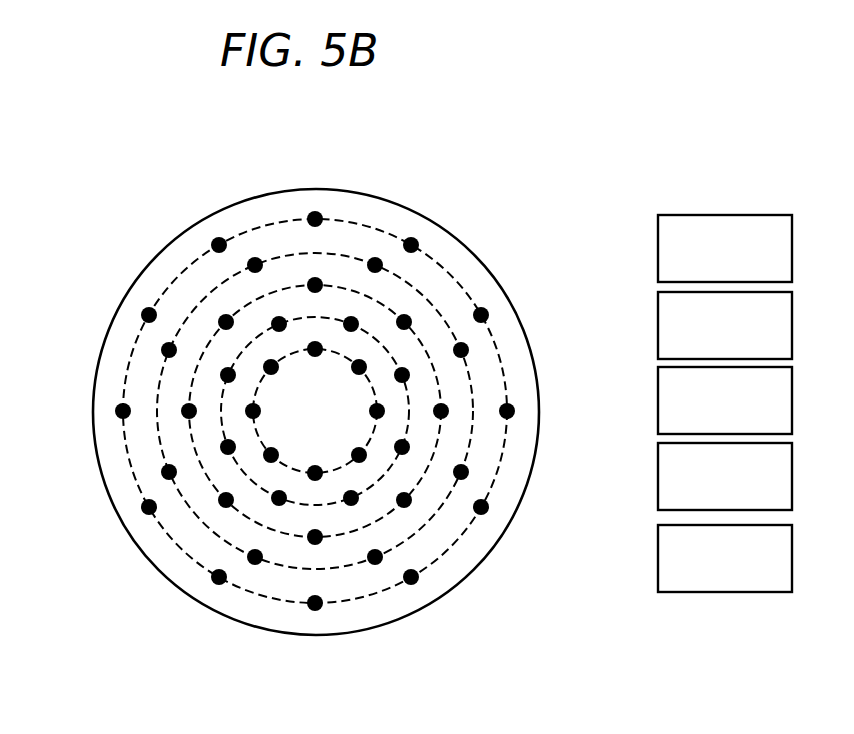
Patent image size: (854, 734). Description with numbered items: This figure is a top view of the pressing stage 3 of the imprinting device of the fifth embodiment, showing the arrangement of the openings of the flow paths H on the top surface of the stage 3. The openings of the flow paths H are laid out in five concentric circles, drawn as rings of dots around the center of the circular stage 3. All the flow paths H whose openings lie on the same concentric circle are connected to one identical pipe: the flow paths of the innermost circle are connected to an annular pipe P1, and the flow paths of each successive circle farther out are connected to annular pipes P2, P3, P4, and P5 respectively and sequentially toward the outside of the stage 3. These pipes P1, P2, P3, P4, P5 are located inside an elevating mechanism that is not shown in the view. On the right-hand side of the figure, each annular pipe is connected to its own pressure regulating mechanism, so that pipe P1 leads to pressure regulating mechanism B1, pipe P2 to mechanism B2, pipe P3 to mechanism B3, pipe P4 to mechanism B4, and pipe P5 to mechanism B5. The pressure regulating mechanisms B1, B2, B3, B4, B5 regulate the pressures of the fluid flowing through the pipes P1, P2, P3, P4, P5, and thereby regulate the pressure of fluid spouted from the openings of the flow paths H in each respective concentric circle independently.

The pressing stage 3 is at (150, 265).
The flow paths H is at (320, 556).
The annular pipe P1 is at (262, 372).
The annular pipe P2 is at (278, 324).
The annular pipe P3 is at (297, 289).
The annular pipe P4 is at (344, 253).
The annular pipe P5 is at (436, 258).
The pressure regulating mechanism B1 is at (342, 472).
The pressure regulating mechanism B2 is at (405, 433).
The pressure regulating mechanism B3 is at (437, 384).
The pressure regulating mechanism B4 is at (468, 352).
The pressure regulating mechanism B5 is at (458, 280).